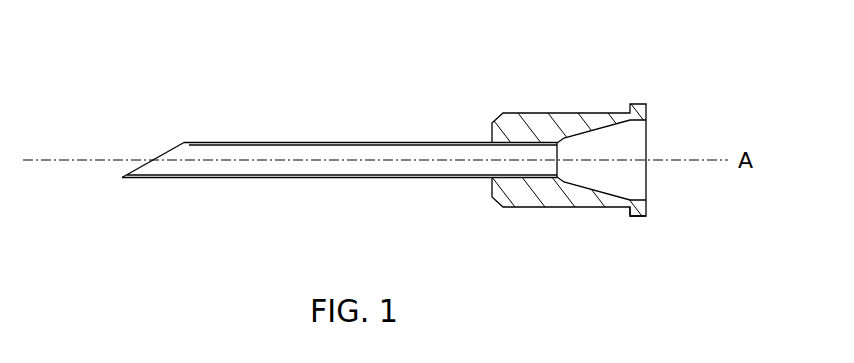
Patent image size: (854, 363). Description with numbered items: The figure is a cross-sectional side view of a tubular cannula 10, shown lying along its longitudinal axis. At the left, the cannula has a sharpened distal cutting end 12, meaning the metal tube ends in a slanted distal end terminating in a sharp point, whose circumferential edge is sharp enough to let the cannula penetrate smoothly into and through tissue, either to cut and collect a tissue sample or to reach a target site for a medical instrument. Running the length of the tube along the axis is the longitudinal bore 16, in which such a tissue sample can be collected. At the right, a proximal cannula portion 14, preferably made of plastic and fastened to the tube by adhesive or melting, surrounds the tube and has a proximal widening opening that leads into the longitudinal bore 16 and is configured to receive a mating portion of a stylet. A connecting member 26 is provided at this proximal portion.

The tubular cannula 10 is at (551, 52).
The sharpened distal cutting end 12 is at (146, 141).
The proximal cannula portion 14 is at (578, 120).
The longitudinal bore 16 is at (363, 158).
The connecting member 26 is at (643, 214).